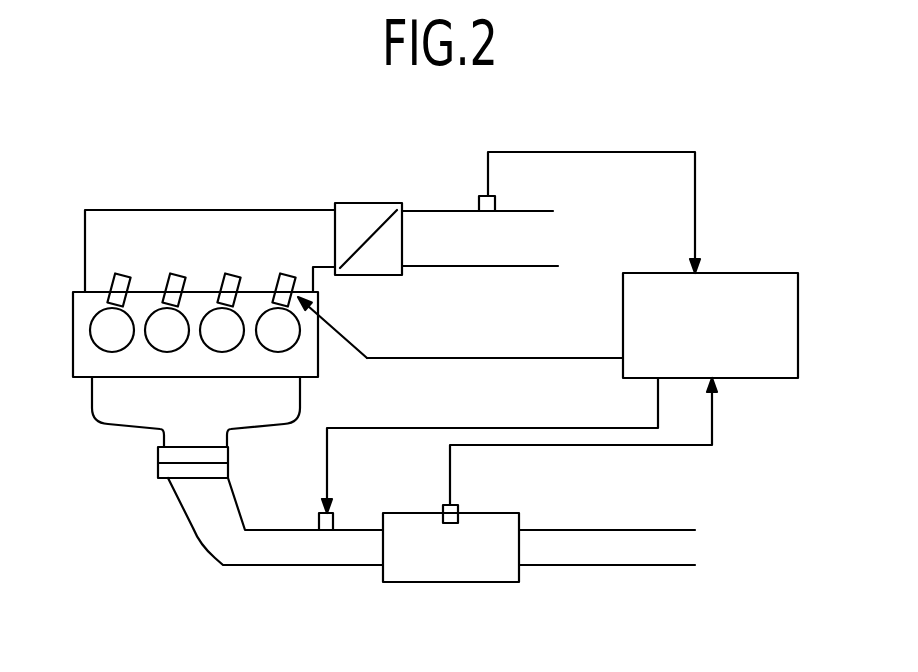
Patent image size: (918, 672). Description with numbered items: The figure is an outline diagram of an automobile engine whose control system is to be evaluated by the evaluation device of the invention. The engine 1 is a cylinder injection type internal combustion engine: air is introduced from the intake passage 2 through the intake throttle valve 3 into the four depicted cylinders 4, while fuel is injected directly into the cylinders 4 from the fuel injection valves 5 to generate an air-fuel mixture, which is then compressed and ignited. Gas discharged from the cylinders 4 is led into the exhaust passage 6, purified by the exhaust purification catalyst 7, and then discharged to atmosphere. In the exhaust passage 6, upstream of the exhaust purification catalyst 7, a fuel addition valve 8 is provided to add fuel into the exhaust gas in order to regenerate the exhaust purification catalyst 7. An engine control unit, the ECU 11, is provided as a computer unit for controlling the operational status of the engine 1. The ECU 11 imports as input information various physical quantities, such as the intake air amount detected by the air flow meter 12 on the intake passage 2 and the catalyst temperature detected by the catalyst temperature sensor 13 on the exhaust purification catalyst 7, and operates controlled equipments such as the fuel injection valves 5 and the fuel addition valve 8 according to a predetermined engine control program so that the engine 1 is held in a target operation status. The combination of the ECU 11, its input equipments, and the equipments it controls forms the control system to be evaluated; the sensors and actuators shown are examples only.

The engine 1 is at (123, 377).
The intake passage 2 is at (433, 210).
The intake throttle valve 3 is at (367, 203).
The cylinders 4 is at (278, 330).
The fuel injection valves 5 is at (175, 273).
The exhaust passage 6 is at (208, 545).
The exhaust purification catalyst 7 is at (487, 513).
The fuel addition valve 8 is at (333, 518).
The engine control unit (ECU) 11 is at (728, 273).
The air flow meter 12 is at (479, 200).
The catalyst temperature sensor 13 is at (443, 505).